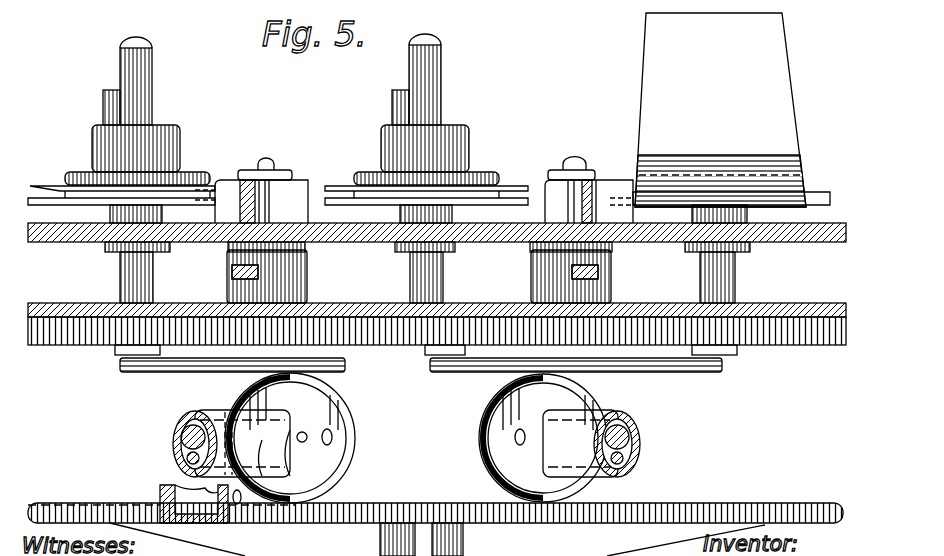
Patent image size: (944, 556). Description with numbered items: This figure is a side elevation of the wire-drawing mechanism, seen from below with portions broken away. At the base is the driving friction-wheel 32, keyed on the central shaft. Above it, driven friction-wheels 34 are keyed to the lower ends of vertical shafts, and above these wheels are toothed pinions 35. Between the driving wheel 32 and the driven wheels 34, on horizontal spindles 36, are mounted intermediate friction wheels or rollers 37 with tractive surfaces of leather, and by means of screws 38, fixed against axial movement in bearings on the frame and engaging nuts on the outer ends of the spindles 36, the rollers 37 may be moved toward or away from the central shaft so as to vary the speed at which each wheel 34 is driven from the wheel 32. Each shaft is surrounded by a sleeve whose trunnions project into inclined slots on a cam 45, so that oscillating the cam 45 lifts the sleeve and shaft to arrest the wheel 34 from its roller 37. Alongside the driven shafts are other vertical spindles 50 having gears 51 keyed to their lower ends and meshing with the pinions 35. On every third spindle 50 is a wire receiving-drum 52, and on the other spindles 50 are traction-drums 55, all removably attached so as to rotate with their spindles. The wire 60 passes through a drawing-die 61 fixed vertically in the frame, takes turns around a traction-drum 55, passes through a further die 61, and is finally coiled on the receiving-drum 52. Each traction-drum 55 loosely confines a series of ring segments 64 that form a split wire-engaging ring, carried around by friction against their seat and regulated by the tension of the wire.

The driving friction-wheel 32 is at (740, 502).
The driven friction-wheel 34 is at (706, 372).
The toothed pinion 35 is at (567, 320).
The horizontal spindle 36 is at (641, 437).
The intermediate friction wheel 37 is at (555, 405).
The screw 38 is at (640, 462).
The cam 45 is at (614, 271).
The vertical spindle 50 is at (737, 277).
The gear 51 is at (825, 346).
The wire receiving drum 52 is at (644, 68).
The traction-drum 55 is at (470, 132).
The wire 60 is at (297, 196).
The drawing-die 61 is at (592, 180).
The ring segment 64 is at (507, 185).